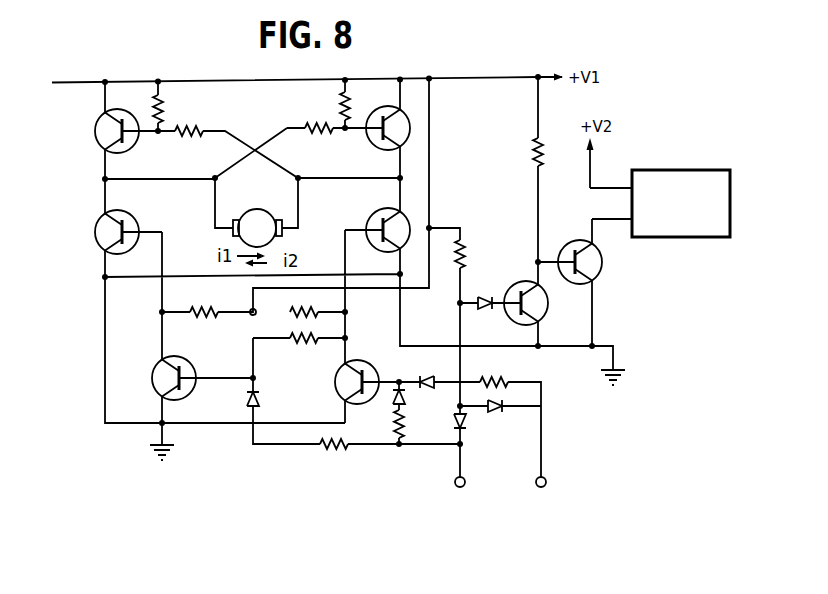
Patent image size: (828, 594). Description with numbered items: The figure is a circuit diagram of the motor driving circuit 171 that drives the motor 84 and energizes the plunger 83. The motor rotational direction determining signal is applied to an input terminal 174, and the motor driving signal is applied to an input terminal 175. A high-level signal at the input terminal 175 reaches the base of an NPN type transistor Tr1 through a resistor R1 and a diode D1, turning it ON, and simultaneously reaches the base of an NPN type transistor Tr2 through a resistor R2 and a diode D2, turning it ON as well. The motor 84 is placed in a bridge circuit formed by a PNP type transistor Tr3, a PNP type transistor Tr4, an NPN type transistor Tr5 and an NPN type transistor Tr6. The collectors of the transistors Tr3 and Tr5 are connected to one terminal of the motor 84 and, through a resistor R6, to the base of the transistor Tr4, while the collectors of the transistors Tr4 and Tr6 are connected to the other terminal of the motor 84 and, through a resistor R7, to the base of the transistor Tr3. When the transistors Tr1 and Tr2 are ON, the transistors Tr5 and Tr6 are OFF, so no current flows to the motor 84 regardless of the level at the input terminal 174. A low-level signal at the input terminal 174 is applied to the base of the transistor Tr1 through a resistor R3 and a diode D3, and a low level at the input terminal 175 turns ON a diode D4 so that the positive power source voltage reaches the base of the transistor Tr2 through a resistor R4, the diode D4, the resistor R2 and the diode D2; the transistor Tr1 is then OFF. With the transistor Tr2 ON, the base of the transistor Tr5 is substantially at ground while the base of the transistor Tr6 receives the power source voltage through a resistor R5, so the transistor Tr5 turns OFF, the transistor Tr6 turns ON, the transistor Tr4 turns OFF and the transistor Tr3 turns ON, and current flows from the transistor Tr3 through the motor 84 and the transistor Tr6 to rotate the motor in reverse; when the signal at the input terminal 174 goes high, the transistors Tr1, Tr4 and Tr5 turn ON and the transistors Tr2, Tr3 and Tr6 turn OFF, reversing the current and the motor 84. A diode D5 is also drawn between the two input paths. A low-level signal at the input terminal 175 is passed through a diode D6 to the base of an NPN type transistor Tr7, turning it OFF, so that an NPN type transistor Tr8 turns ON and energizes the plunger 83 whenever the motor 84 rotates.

The motor driving circuit 171 is at (205, 65).
The motor 84 is at (255, 208).
The plunger 83 is at (678, 170).
The input terminal 174 is at (541, 487).
The input terminal 175 is at (460, 487).
The NPN type transistor Tr1 is at (363, 360).
The NPN type transistor Tr2 is at (183, 362).
The PNP type transistor Tr3 is at (93, 134).
The PNP type transistor Tr4 is at (370, 147).
The NPN type transistor Tr5 is at (93, 235).
The NPN type transistor Tr6 is at (371, 217).
The NPN type transistor Tr7 is at (521, 281).
The NPN type transistor Tr8 is at (604, 262).
The resistor R1 is at (412, 424).
The resistor R2 is at (334, 458).
The resistor R3 is at (494, 369).
The resistor R4 is at (471, 256).
The resistor R5 is at (298, 314).
The resistor R6 is at (318, 120).
The resistor R7 is at (189, 122).
The diode D1 is at (405, 393).
The diode D2 is at (268, 402).
The diode D3 is at (433, 370).
The diode D4 is at (475, 435).
The diode D5 is at (494, 412).
The diode D6 is at (490, 316).